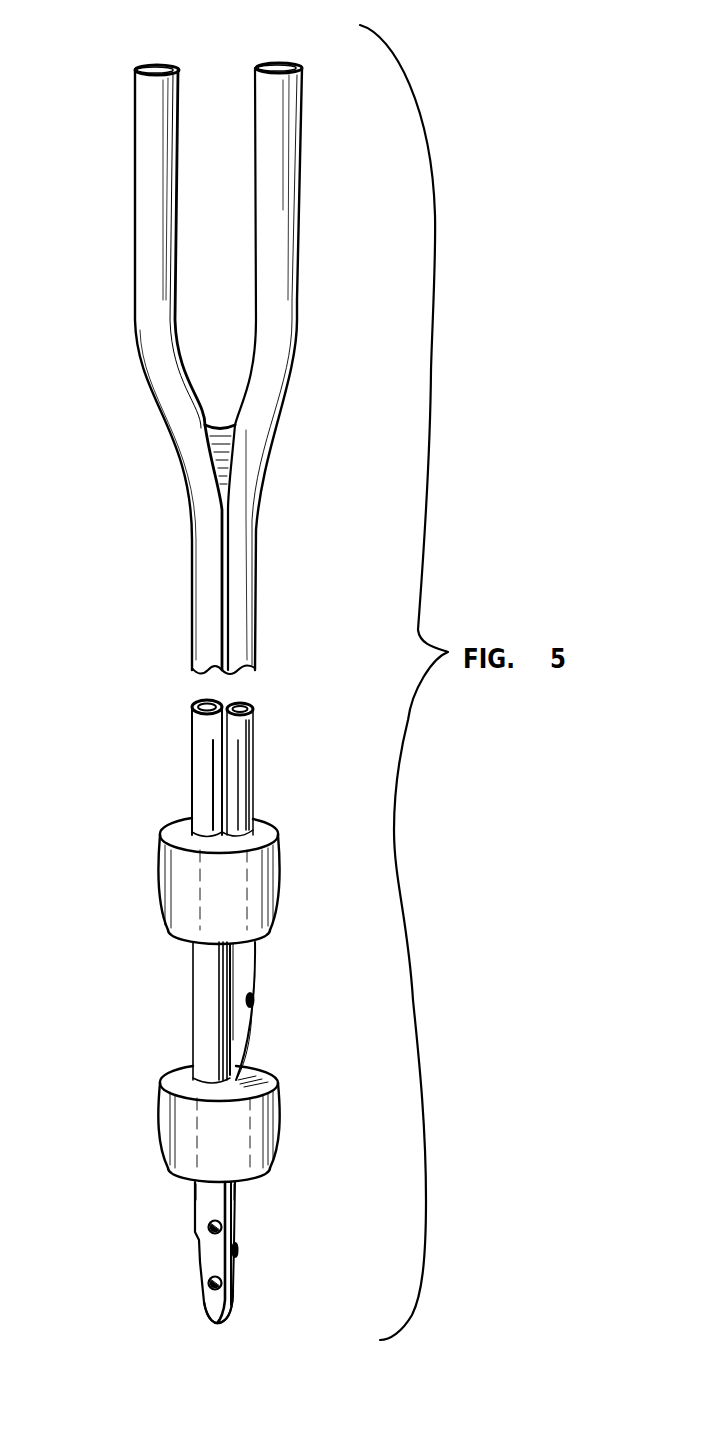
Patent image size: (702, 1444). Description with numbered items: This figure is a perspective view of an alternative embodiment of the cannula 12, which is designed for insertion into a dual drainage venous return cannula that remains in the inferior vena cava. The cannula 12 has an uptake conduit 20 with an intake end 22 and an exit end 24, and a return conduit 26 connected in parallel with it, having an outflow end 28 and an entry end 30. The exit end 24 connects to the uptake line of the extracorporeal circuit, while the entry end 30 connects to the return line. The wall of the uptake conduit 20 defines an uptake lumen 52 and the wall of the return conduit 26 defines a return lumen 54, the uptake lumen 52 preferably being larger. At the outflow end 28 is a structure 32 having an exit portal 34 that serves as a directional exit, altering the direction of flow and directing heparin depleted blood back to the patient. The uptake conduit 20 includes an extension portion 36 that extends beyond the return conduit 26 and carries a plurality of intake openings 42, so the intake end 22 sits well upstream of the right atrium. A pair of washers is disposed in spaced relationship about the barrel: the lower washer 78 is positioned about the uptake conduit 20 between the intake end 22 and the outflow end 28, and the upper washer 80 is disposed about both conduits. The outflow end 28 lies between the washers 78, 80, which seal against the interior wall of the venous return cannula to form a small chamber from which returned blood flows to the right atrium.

The cannula 12 is at (165, 741).
The uptake conduit 20 is at (208, 543).
The intake end 22 is at (220, 1325).
The exit end 24 is at (152, 66).
The return conduit 26 is at (250, 457).
The outflow end 28 is at (242, 978).
The entry end 30 is at (279, 66).
The structure 32 is at (238, 1023).
The exit portal 34 is at (253, 1002).
The extension portion 36 is at (203, 1196).
The intake openings 42 is at (205, 1285).
The uptake lumen 52 is at (200, 700).
The return lumen 54 is at (250, 706).
The lower washer 78 is at (258, 1135).
The upper washer 80 is at (190, 872).